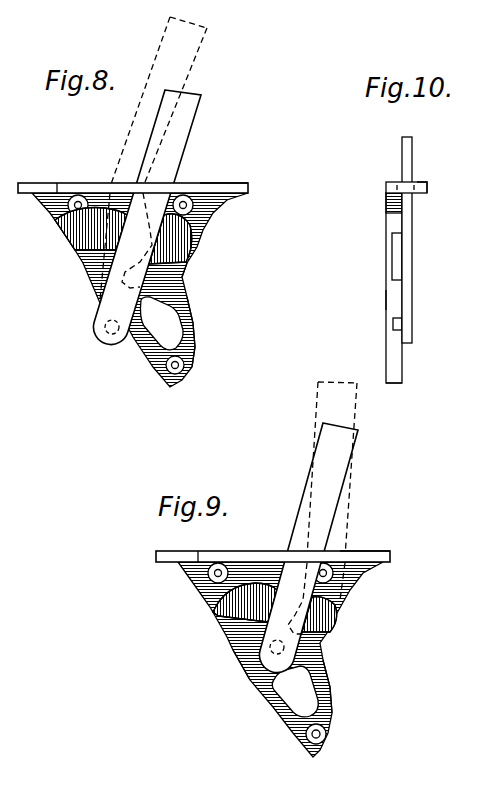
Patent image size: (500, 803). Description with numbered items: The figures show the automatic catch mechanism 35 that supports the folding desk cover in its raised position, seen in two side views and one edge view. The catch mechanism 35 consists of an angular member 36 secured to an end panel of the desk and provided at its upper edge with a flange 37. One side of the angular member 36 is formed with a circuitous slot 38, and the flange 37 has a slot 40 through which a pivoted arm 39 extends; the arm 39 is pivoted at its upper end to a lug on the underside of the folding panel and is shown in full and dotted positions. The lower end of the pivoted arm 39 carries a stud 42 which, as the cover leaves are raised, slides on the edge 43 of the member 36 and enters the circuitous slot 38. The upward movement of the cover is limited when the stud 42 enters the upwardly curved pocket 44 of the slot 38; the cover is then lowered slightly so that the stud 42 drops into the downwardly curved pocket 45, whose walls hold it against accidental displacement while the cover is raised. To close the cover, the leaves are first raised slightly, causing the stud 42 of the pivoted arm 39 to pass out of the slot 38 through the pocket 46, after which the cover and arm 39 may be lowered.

In FIG. 8, the catch mechanism 35 is at (193, 360).
In FIG. 9, the catch mechanism 35 is at (332, 720).
In FIG. 10, the catch mechanism 35 is at (407, 303).
In FIG. 8, the angular member 36 is at (181, 306).
In FIG. 9, the angular member 36 is at (313, 658).
In FIG. 10, the angular member 36 is at (360, 303).
In FIG. 8, the flange 37 is at (192, 185).
In FIG. 9, the flange 37 is at (262, 547).
In FIG. 10, the flange 37 is at (428, 191).
In FIG. 8, the circuitous slot 38 is at (87, 252).
In FIG. 9, the circuitous slot 38 is at (230, 612).
In FIG. 10, the circuitous slot 38 is at (427, 256).
In FIG. 8, the pivoted arm 39 is at (118, 174).
In FIG. 9, the pivoted arm 39 is at (323, 499).
In FIG. 10, the pivoted arm 39 is at (432, 240).
In FIG. 8, the slot 40 is at (215, 190).
In FIG. 9, the slot 40 is at (357, 557).
In FIG. 10, the slot 40 is at (427, 184).
In FIG. 8, the stud 42 is at (108, 338).
In FIG. 9, the stud 42 is at (257, 673).
In FIG. 10, the stud 42 is at (373, 336).
In FIG. 8, the edge 43 is at (150, 345).
In FIG. 9, the edge 43 is at (277, 703).
In FIG. 10, the edge 43 is at (415, 372).
In FIG. 8, the upwardly curved pocket 44 is at (80, 236).
In FIG. 9, the upwardly curved pocket 44 is at (230, 607).
In FIG. 8, the downwardly curved pocket 45 is at (181, 267).
In FIG. 9, the downwardly curved pocket 45 is at (247, 650).
In FIG. 8, the pocket 46 is at (180, 242).
In FIG. 9, the pocket 46 is at (332, 618).